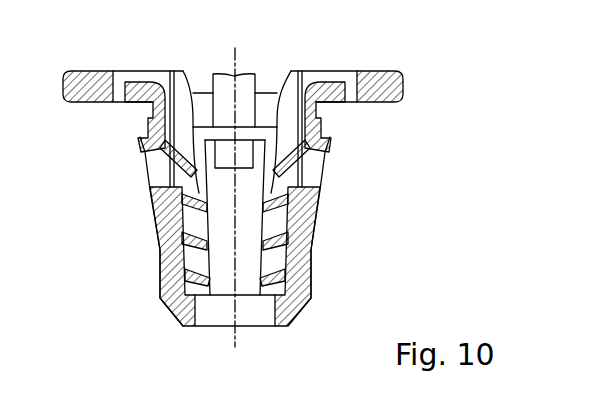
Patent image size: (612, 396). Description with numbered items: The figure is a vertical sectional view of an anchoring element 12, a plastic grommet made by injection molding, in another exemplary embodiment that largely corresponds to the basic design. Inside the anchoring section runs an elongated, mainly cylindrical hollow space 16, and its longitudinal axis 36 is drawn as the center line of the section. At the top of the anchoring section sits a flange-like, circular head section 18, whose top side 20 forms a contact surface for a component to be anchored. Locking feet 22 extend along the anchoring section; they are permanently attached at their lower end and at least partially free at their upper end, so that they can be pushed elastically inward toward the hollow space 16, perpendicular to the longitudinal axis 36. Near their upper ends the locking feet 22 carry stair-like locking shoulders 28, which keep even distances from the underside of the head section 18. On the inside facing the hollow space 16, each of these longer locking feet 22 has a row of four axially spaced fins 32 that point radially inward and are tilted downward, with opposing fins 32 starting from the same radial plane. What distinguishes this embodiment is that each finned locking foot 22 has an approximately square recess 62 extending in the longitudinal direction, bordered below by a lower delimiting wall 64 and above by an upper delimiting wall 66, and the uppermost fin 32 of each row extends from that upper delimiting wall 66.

The anchoring element 12 is at (406, 187).
The hollow space 16 is at (243, 283).
The head section 18 is at (259, 61).
The top side 20 is at (376, 71).
The locking feet 22 is at (231, 255).
The locking shoulders 28 is at (150, 120).
The fins 32 is at (183, 71).
The longitudinal axis 36 is at (240, 71).
The recess 62 is at (153, 168).
The lower delimiting wall 64 is at (157, 187).
The upper delimiting wall 66 is at (141, 155).